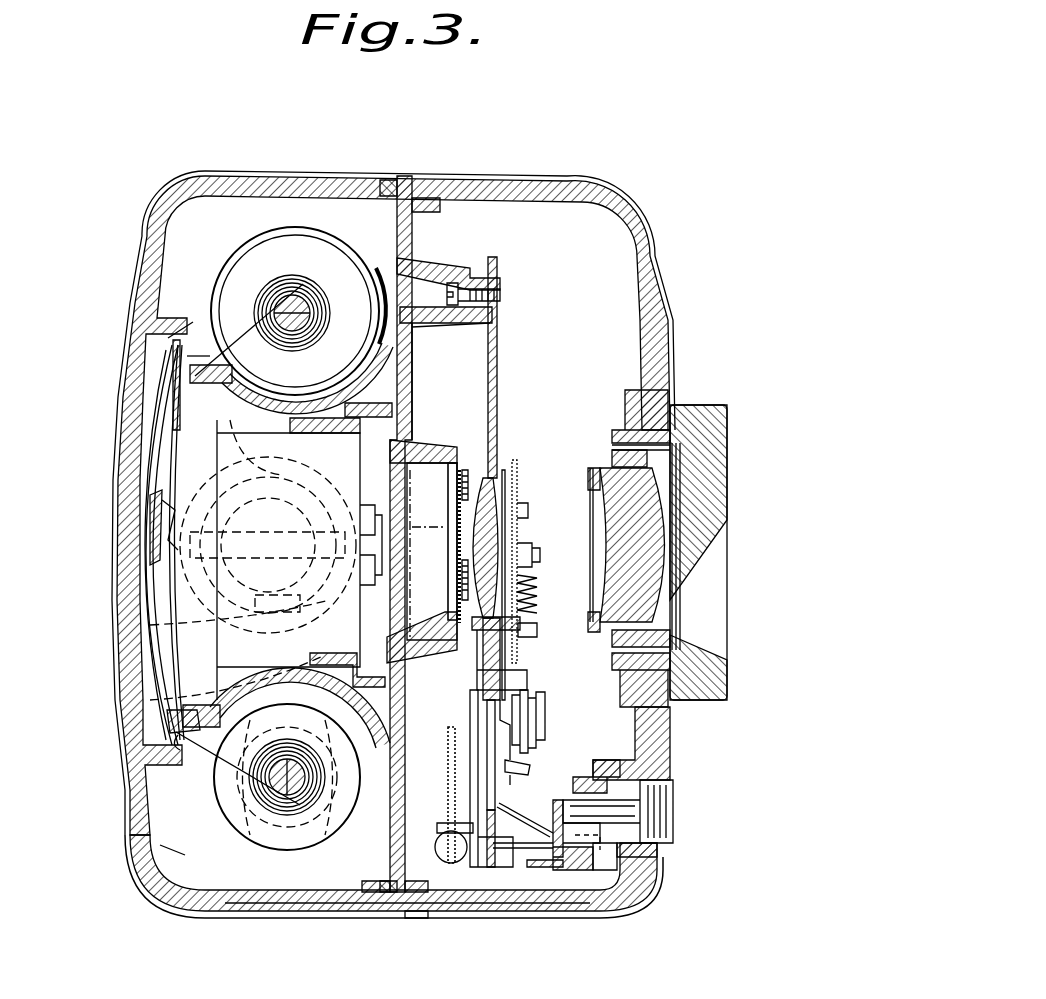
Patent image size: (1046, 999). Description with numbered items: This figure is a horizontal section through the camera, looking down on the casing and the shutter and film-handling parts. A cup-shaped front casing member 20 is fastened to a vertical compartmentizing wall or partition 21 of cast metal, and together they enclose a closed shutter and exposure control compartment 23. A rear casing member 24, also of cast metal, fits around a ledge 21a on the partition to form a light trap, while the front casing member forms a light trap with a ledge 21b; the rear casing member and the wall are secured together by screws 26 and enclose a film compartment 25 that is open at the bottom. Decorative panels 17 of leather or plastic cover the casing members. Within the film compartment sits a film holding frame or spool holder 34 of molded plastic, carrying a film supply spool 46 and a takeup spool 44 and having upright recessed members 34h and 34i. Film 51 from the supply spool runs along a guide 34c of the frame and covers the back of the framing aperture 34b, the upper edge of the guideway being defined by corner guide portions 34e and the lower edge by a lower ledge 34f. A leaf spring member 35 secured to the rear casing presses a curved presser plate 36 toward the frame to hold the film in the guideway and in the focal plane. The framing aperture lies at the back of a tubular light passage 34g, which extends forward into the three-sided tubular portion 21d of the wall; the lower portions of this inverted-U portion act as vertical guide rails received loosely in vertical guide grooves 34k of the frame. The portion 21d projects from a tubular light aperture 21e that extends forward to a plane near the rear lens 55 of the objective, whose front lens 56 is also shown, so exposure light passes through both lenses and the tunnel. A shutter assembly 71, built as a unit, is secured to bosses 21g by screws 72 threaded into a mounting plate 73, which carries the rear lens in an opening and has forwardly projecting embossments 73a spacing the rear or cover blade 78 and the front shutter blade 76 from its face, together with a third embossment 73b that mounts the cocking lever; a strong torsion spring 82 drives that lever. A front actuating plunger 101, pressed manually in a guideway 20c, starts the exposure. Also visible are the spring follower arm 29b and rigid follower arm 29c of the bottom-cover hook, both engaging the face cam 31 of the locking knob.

The decorative panels 17 is at (130, 304).
The front casing member 20 is at (628, 880).
The guideway 20c is at (582, 864).
The compartmentizing wall 21 is at (413, 380).
The ledge 21a is at (370, 880).
The ledge 21b is at (412, 413).
The tubular flange portion 21d is at (286, 700).
The tubular light aperture 21e is at (430, 642).
The bosses 21g is at (466, 282).
The shutter and exposure control compartment 23 is at (580, 870).
The rear casing member 24 is at (320, 899).
The film compartment 25 is at (197, 860).
The screws 26 is at (392, 182).
The spring follower arm 29b is at (172, 670).
The rigid follower arm 29c is at (253, 557).
The cam 31 is at (160, 607).
The film holding frame 34 is at (413, 363).
The framing aperture 34b is at (170, 710).
The guide 34c is at (206, 352).
The corner guide portions 34e is at (195, 352).
The lower ledge 34f is at (165, 650).
The tubular light passage 34g is at (345, 454).
The upright recessed member 34h is at (372, 292).
The upright recessed member 34i is at (312, 791).
The vertical guide grooves 34k is at (325, 422).
The leaf spring member 35 is at (160, 417).
The curved presser plate 36 is at (175, 439).
The takeup spool 44 is at (235, 827).
The film supply spool 46 is at (256, 262).
The film 51 is at (212, 740).
The rear lens 55 is at (488, 547).
The front lens 56 is at (613, 487).
The shutter assembly 71 is at (518, 351).
The screws 72 is at (452, 285).
The mounting plate 73 is at (503, 372).
The forwardly projecting embossments 73a is at (505, 650).
The forwardly projecting embossment 73b is at (520, 770).
The front shutter blade 76 is at (514, 482).
The rear cover blade 78 is at (530, 632).
The torsion spring 82 is at (546, 740).
The front actuating plunger 101 is at (668, 814).